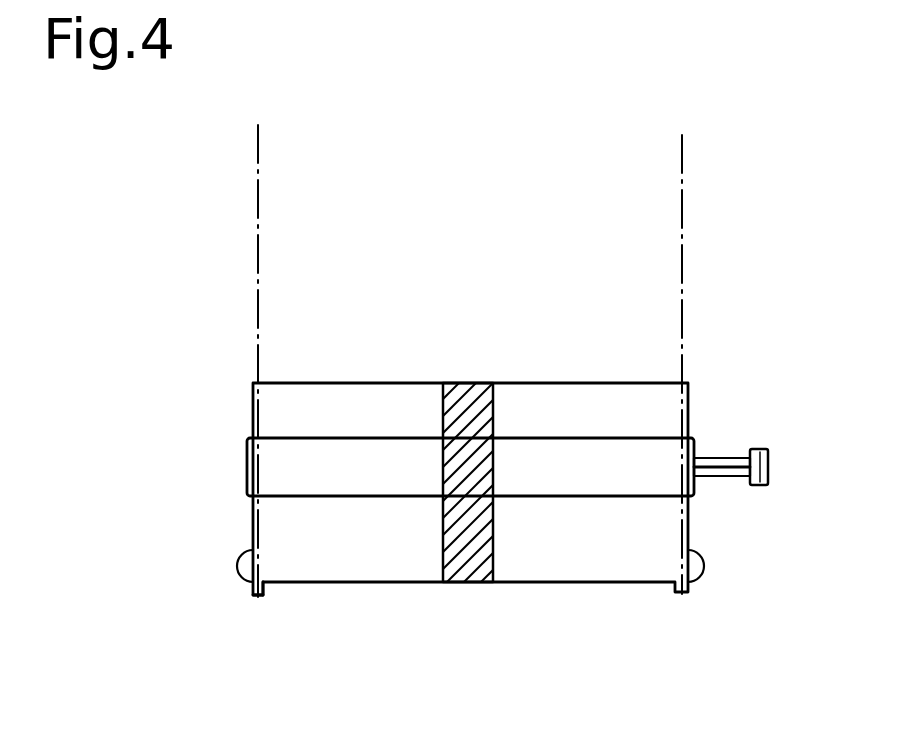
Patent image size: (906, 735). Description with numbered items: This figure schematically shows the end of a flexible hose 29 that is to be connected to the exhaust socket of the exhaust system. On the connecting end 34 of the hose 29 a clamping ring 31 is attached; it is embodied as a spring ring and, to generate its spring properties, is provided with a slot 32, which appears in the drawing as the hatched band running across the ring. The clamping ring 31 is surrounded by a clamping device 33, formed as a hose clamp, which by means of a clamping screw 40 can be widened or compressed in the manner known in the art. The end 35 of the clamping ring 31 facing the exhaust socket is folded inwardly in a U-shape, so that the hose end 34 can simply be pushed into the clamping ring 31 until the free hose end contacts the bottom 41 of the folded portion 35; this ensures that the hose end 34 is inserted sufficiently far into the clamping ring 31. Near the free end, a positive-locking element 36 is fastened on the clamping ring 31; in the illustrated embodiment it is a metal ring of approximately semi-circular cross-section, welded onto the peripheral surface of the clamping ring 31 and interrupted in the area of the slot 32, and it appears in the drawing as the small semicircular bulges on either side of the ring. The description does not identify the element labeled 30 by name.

The flexible hose 29 is at (690, 143).
The roller body 30 is at (683, 362).
The clamping ring 31 is at (344, 556).
The slot 32 is at (467, 548).
The clamping device 33 is at (652, 466).
The connecting end 34 is at (230, 545).
The end of the clamping ring 35 is at (262, 596).
The positive-locking element 36 is at (240, 572).
The clamping screw 40 is at (766, 459).
The bottom of the folded portion 41 is at (257, 594).